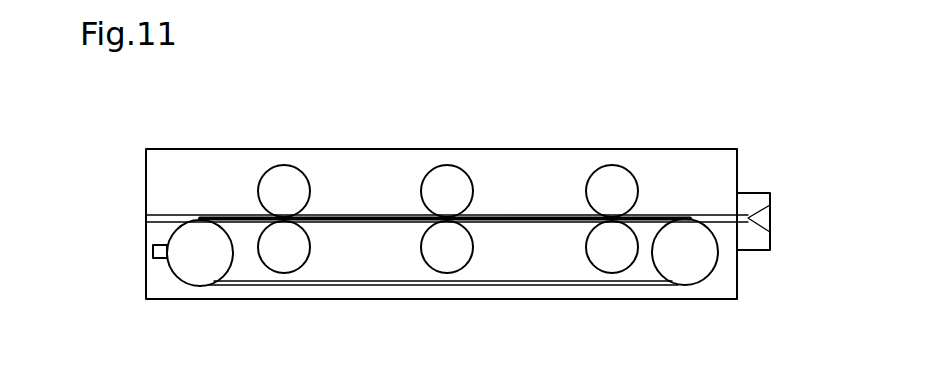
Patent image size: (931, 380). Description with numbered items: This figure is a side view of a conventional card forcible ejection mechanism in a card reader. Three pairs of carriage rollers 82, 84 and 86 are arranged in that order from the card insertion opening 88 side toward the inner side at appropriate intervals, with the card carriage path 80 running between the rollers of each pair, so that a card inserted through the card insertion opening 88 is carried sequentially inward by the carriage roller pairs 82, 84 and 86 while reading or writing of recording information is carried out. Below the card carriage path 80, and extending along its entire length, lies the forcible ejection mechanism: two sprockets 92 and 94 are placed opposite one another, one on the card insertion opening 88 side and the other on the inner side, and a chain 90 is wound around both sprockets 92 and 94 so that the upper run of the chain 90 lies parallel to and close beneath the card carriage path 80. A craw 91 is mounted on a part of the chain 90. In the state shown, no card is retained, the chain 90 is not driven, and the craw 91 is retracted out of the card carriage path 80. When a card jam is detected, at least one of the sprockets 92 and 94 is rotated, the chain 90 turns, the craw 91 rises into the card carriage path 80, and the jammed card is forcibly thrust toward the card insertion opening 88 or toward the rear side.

The card carriage path 80 is at (717, 216).
The carriage roller pair 82 is at (620, 240).
The carriage roller pair 84 is at (462, 243).
The carriage roller pair 86 is at (300, 244).
The card insertion opening 88 is at (768, 218).
The chain 90 is at (497, 288).
The craw 91 is at (150, 250).
The sprocket 92 is at (690, 275).
The sprocket 94 is at (193, 273).